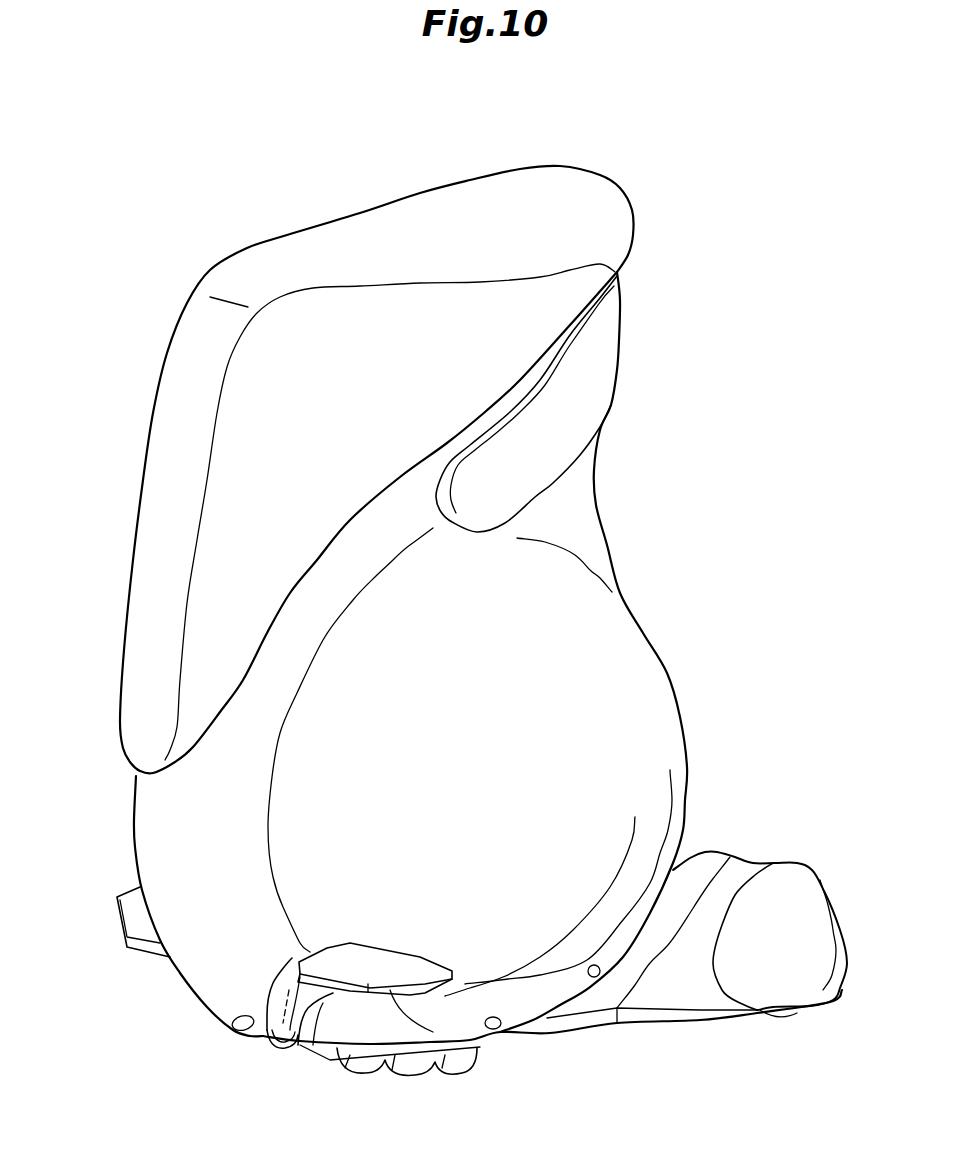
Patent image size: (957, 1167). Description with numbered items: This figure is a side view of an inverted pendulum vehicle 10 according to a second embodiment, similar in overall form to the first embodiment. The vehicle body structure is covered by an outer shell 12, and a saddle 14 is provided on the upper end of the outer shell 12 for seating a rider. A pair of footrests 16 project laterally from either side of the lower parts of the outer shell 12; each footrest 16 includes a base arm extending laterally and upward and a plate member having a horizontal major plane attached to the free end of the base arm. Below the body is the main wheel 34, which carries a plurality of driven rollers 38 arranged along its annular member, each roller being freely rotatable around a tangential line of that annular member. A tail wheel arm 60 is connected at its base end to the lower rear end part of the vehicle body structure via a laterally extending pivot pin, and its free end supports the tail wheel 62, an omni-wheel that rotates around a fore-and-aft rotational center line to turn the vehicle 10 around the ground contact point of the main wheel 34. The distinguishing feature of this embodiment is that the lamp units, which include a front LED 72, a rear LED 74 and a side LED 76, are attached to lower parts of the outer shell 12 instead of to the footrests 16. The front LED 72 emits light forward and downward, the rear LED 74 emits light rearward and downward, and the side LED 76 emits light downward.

The inverted pendulum vehicle 10 is at (452, 619).
The outer shell 12 is at (647, 687).
The saddle 14 is at (505, 187).
The footrest 16 is at (137, 895).
The main wheel 34 is at (330, 1060).
The driven rollers 38 is at (447, 1073).
The tail wheel arm 60 is at (589, 1011).
The tail wheel 62 is at (793, 1017).
The front LED 72 is at (233, 1033).
The rear LED 74 is at (594, 964).
The side LED 76 is at (503, 1033).